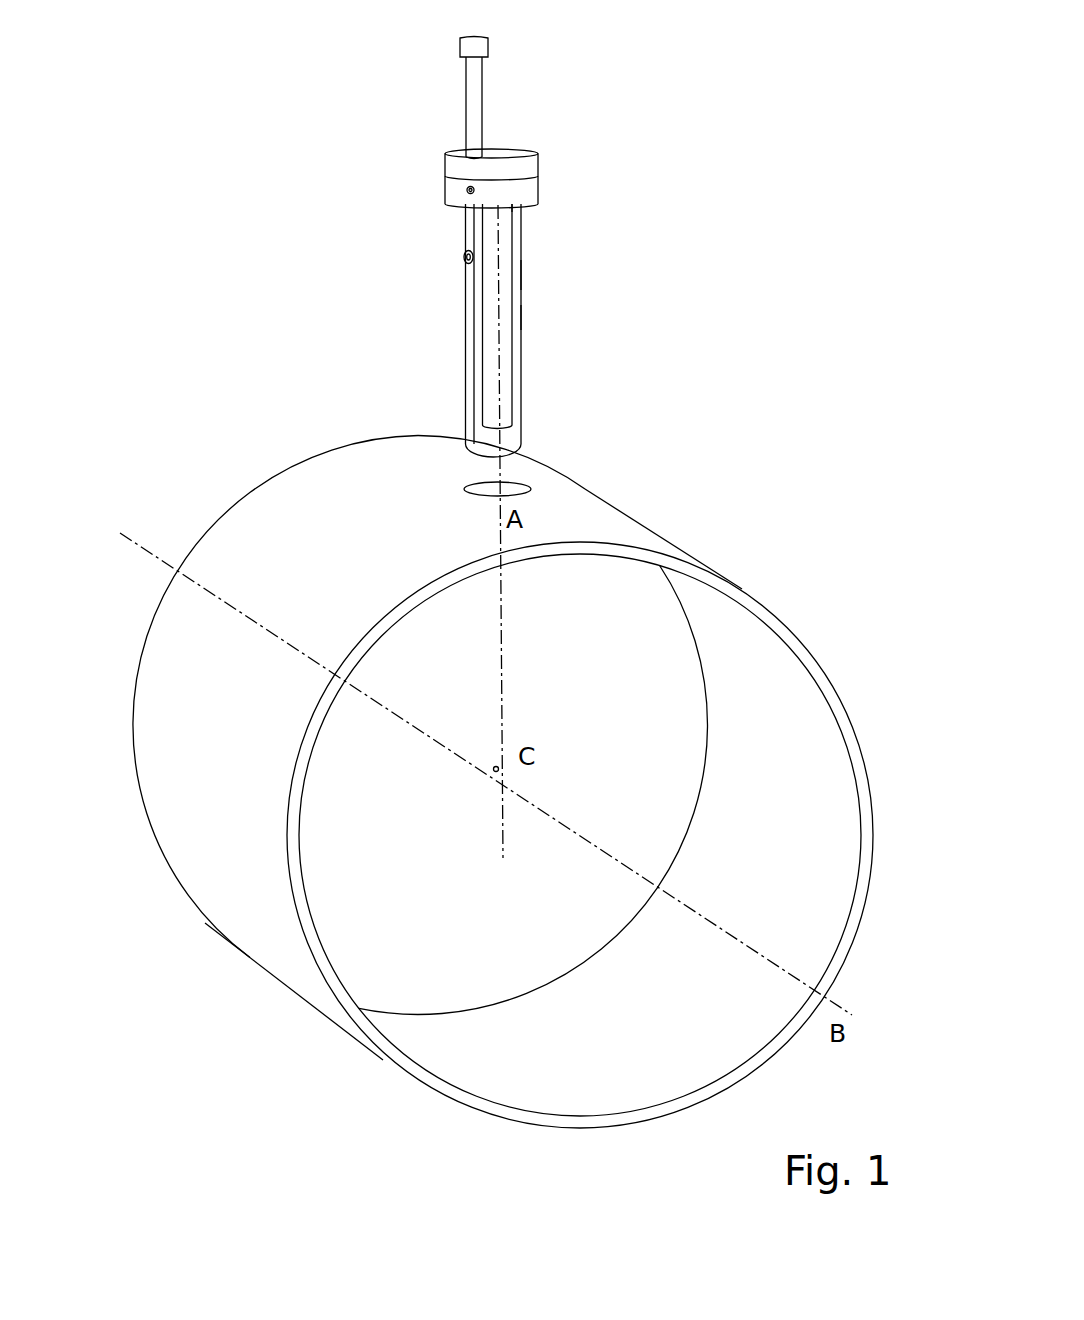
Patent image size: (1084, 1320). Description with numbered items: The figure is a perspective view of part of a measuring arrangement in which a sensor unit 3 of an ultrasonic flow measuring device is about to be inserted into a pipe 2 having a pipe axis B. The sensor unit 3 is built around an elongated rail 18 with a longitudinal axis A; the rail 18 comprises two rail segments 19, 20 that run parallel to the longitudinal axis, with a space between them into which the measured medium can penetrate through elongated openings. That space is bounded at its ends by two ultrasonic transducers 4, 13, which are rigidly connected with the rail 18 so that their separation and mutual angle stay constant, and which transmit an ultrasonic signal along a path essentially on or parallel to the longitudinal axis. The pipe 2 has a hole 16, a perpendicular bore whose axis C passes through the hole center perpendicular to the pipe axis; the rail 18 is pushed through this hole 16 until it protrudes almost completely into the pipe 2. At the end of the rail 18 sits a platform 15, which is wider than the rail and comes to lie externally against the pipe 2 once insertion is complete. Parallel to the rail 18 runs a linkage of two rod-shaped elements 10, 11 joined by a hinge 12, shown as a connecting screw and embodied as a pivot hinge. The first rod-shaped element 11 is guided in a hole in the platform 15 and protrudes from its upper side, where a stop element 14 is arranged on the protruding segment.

The pipe 2 is at (778, 626).
The sensor unit 3 is at (517, 353).
The ultrasonic transducer 4 is at (513, 423).
The rod-shaped element 10 is at (463, 332).
The rod-shaped element 11 is at (482, 108).
The hinge 12 is at (463, 258).
The ultrasonic transducer 13 is at (503, 206).
The stop element 14 is at (488, 47).
The platform 15 is at (527, 188).
The hole 16 is at (522, 490).
The rail 18 is at (521, 318).
The rail segment 19 is at (521, 277).
The rail segment 20 is at (474, 364).